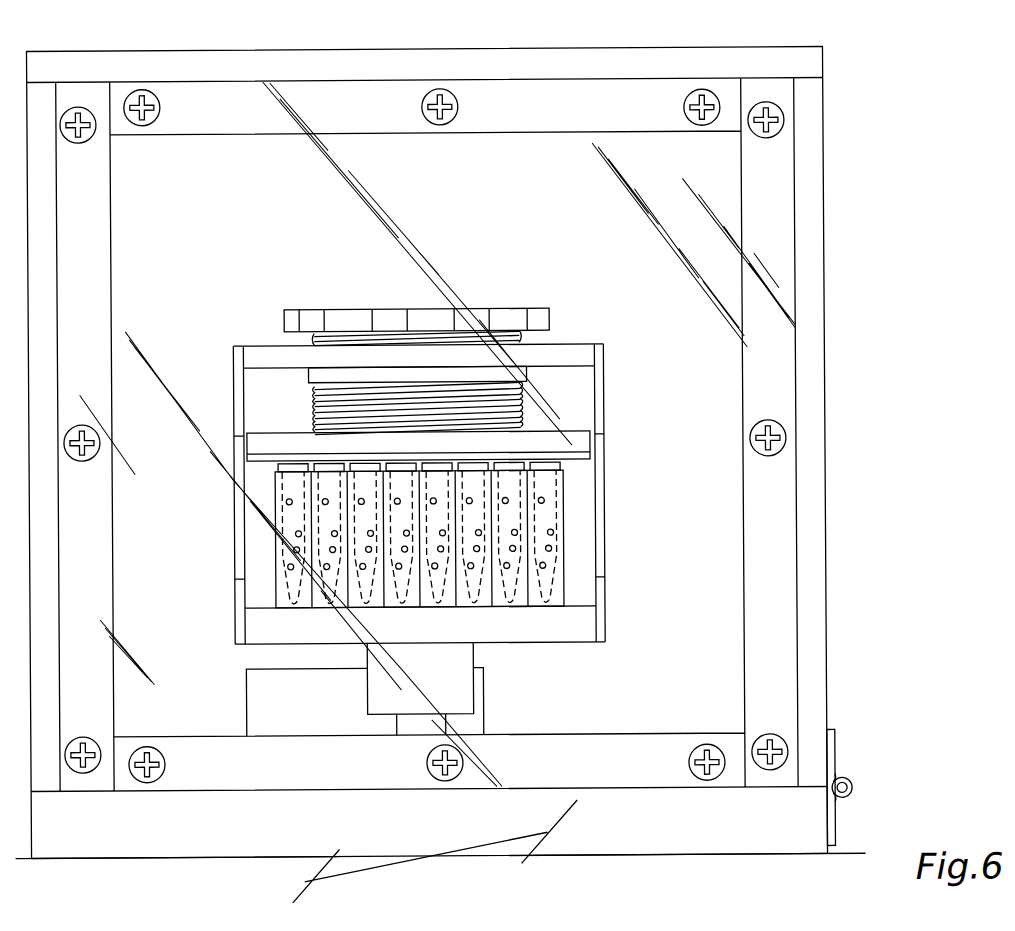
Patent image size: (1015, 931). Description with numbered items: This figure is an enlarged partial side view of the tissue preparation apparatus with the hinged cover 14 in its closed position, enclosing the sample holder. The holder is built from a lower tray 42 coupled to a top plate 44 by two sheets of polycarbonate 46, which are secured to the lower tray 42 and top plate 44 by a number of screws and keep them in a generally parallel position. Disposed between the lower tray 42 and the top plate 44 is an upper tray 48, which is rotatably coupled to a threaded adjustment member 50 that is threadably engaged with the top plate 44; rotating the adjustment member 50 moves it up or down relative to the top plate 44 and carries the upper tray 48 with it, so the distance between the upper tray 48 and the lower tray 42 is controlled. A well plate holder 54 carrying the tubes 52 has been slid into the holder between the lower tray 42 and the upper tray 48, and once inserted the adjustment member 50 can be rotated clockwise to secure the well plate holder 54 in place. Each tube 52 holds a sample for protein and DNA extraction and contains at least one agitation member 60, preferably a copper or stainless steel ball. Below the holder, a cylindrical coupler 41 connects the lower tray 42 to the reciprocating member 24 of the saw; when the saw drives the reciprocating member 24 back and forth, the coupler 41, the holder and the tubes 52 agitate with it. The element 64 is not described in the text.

The hinged cover 14 is at (826, 119).
The reciprocating member 24 is at (414, 728).
The coupler 41 is at (463, 695).
The lower tray 42 is at (572, 630).
The top plate 44 is at (568, 357).
The sheets of polycarbonate 46 is at (242, 532).
The upper tray 48 is at (285, 445).
The threaded adjustment member 50 is at (315, 316).
The tubes 52 is at (543, 542).
The well plate holder 54 is at (563, 512).
The agitation member 60 is at (510, 612).
The platform 64 is at (245, 672).